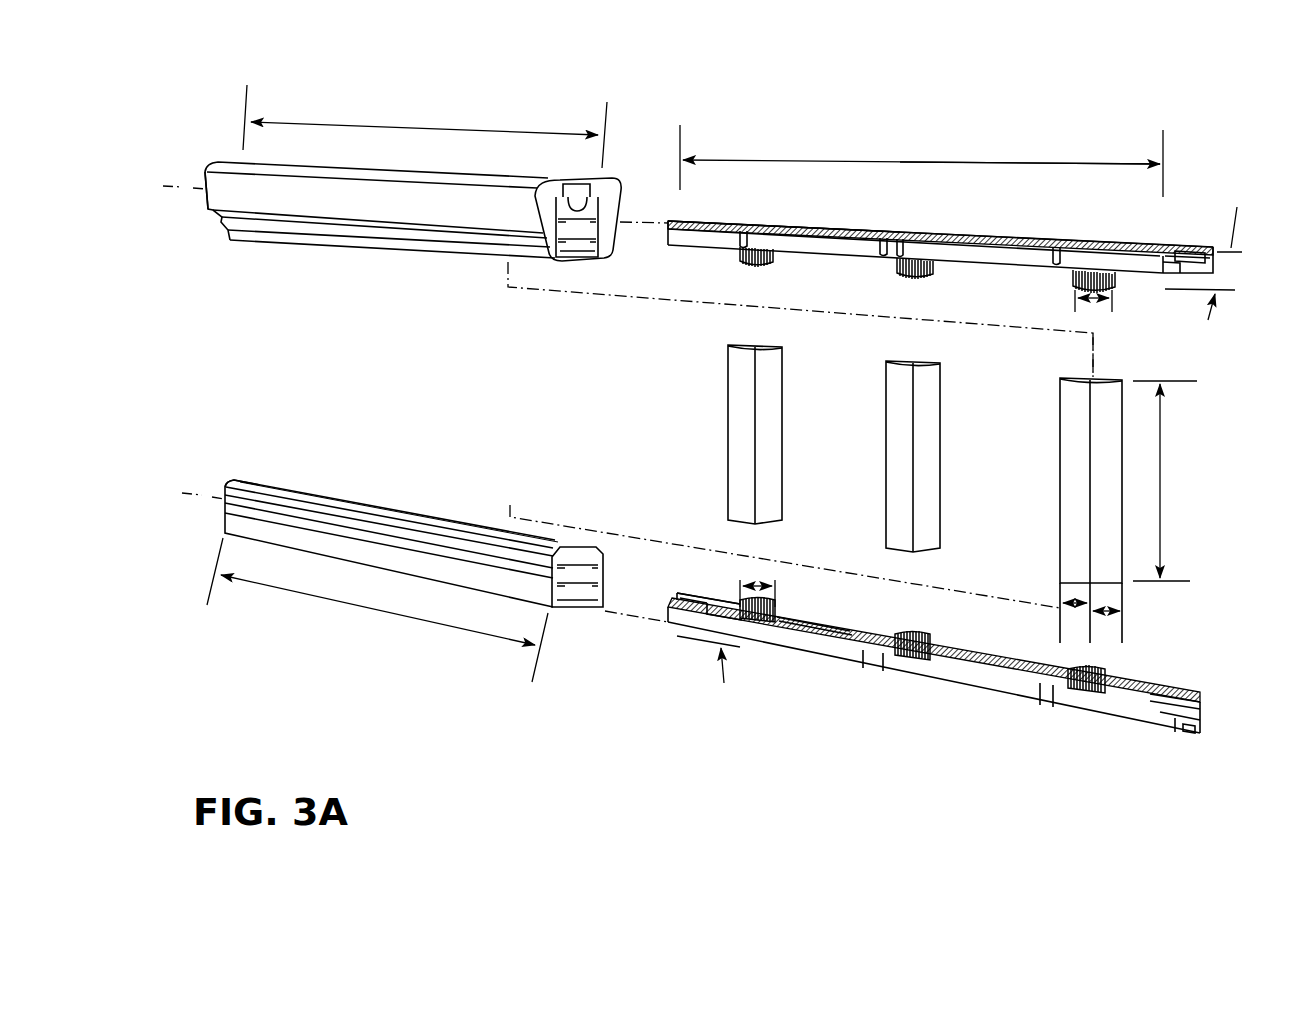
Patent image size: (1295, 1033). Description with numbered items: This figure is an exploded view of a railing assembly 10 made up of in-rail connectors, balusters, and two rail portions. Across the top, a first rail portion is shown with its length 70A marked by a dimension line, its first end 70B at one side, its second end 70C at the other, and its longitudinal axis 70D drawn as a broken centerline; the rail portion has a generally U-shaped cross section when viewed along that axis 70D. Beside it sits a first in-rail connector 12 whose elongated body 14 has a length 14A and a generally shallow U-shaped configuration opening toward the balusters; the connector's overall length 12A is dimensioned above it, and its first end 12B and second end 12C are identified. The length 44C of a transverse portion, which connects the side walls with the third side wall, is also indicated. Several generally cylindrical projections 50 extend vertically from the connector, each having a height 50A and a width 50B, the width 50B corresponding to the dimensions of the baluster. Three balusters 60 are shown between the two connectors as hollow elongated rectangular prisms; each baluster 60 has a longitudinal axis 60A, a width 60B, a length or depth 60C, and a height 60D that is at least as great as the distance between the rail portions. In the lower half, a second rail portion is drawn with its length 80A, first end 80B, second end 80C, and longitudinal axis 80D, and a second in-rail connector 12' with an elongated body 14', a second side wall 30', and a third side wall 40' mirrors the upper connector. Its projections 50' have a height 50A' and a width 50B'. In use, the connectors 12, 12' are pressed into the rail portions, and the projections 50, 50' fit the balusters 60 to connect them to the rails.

The railing assembly 10 is at (370, 682).
The first in-rail connector 12 is at (940, 228).
The in-rail connector length 12A is at (983, 138).
The first end 12B is at (1167, 295).
The second end 12C is at (730, 210).
The second in-rail connector 12' is at (934, 689).
The elongated body 14 is at (940, 224).
The length of elongated body 14A is at (1120, 140).
The elongated body 14' is at (771, 661).
The second side wall 30' is at (1188, 685).
The third side wall 40' is at (1167, 759).
The length of transverse portion 44C is at (1030, 123).
The projection 50 is at (897, 280).
The height of projection 50A is at (1213, 210).
The width of projection 50B is at (1118, 312).
The projection 50' is at (922, 645).
The height of projection 50A' is at (707, 586).
The width of projection 50B' is at (784, 566).
The baluster 60 is at (722, 413).
The longitudinal axis of baluster 60A is at (1102, 357).
The width of baluster 60B is at (1107, 634).
The length/depth of baluster 60C is at (1077, 627).
The height of baluster 60D is at (1164, 430).
The length of first rail portion 70A is at (555, 118).
The first end of first rail portion 70B is at (623, 175).
The second end of first rail portion 70C is at (212, 158).
The longitudinal axis of first rail portion 70D is at (181, 191).
The length of second rail portion 80A is at (490, 658).
The first end of second rail portion 80B is at (583, 527).
The second end of second rail portion 80C is at (238, 472).
The longitudinal axis of second rail portion 80D is at (200, 492).